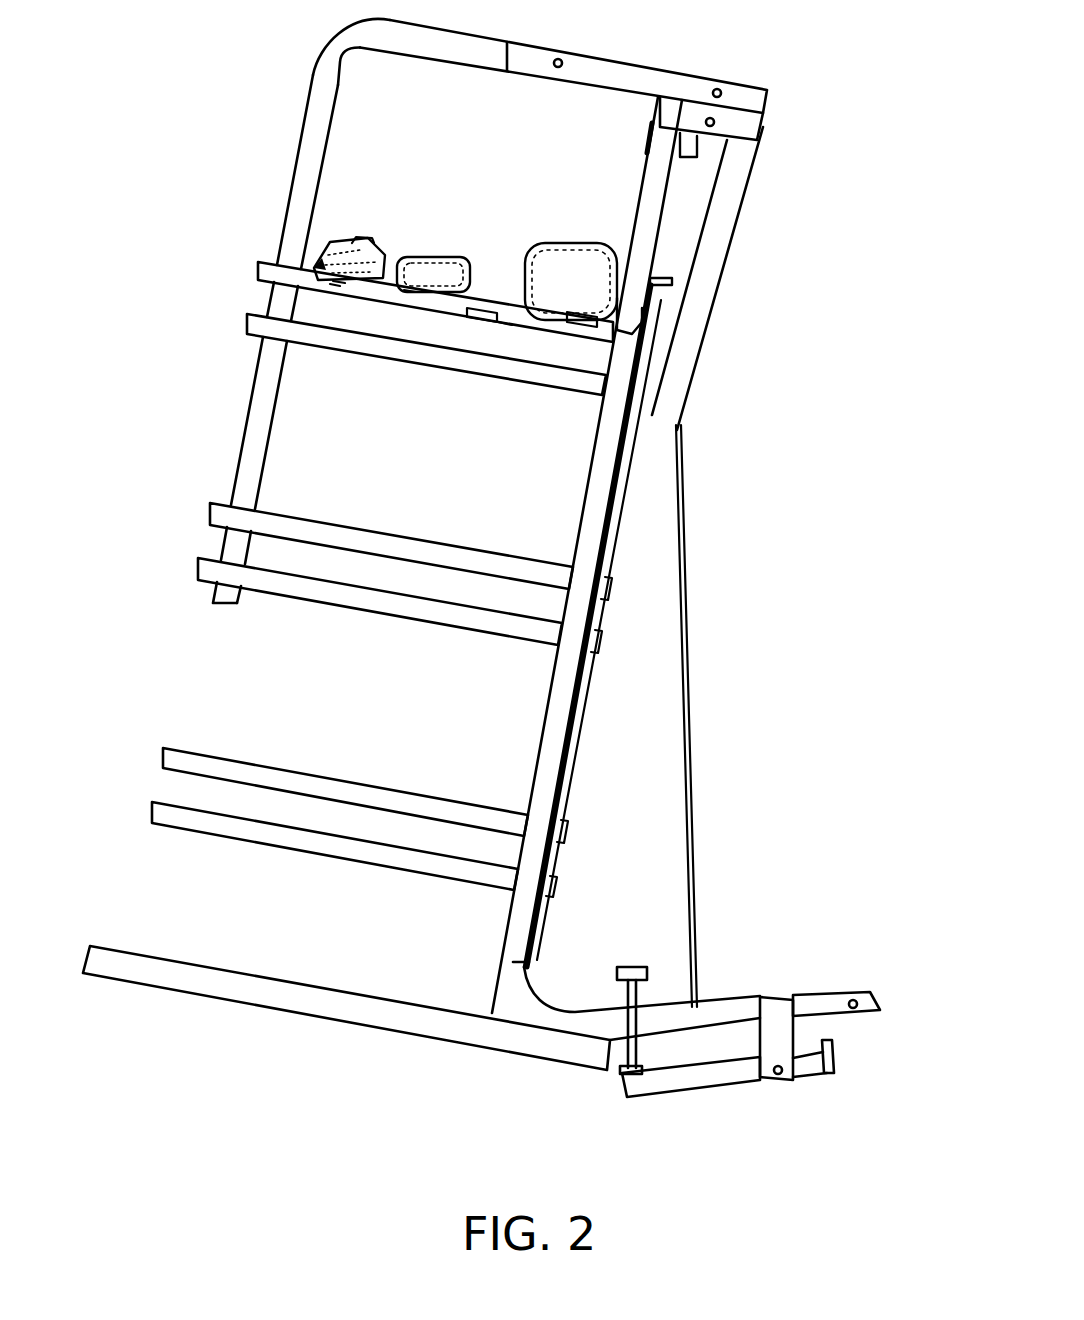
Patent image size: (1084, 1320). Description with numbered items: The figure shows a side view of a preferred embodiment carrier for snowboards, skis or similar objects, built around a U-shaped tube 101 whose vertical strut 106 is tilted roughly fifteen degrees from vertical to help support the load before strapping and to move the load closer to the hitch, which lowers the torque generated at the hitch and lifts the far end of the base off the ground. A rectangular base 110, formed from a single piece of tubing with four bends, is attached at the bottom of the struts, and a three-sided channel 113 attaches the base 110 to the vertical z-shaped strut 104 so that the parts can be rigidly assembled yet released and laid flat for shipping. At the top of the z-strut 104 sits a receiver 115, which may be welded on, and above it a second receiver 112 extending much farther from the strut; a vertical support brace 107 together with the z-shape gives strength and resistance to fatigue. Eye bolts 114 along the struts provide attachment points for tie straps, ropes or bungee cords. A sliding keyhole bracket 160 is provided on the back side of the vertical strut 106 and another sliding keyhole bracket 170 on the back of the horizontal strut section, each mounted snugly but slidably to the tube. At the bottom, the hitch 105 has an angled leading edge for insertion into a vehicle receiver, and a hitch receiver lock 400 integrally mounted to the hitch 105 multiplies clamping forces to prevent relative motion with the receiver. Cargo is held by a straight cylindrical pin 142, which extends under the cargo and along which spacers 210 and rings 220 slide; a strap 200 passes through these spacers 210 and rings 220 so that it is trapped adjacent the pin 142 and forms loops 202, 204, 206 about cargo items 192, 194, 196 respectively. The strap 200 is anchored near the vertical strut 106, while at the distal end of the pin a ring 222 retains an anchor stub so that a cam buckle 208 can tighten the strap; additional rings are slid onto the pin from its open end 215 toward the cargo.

The U-shaped tube 101 is at (174, 49).
The z-shaped strut 104 is at (710, 263).
The hitch 105 is at (838, 1000).
The vertical strut 106 is at (640, 186).
The vertical support brace 107 is at (684, 637).
The rectangular base 110 is at (107, 967).
The second receiver 112 is at (705, 78).
The three-sided channel 113 is at (653, 129).
The eye bolts 114 is at (722, 168).
The receiver 115 is at (760, 108).
The pin 142 is at (285, 281).
The sliding keyhole bracket 160 is at (660, 302).
The sliding keyhole bracket 170 is at (700, 150).
The cargo 192 is at (545, 322).
The cargo 194 is at (425, 292).
The cargo 196 is at (338, 284).
The strap 200 is at (417, 216).
The loop 202 is at (542, 252).
The loop 204 is at (445, 258).
The loop 206 is at (383, 255).
The buckle 208 is at (330, 240).
The spacers 210 is at (505, 325).
The open end 215 is at (260, 268).
The rings 220 is at (410, 292).
The ring 222 is at (335, 290).
The hitch receiver lock 400 is at (626, 1106).